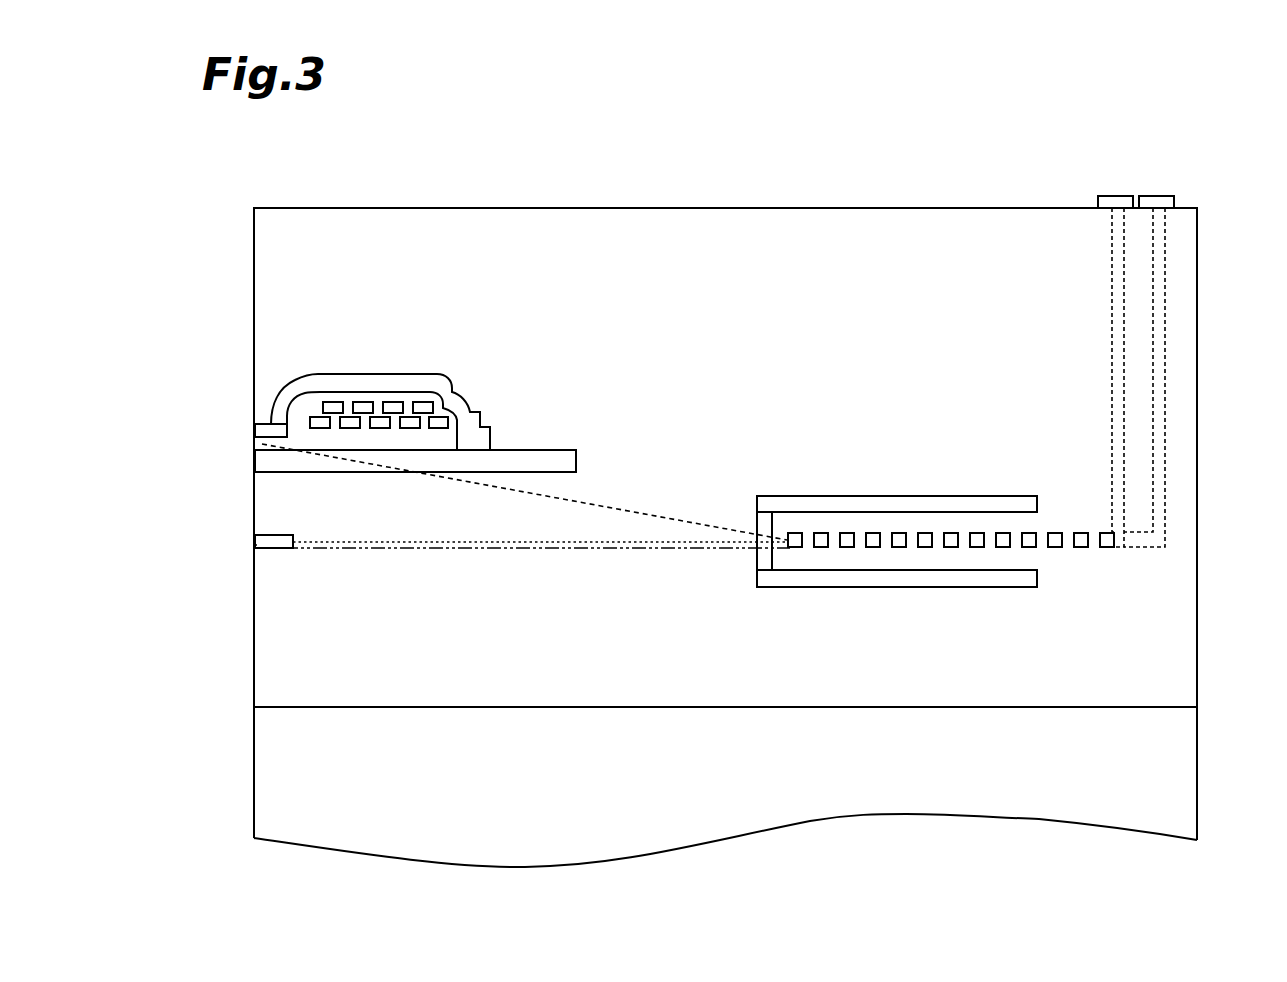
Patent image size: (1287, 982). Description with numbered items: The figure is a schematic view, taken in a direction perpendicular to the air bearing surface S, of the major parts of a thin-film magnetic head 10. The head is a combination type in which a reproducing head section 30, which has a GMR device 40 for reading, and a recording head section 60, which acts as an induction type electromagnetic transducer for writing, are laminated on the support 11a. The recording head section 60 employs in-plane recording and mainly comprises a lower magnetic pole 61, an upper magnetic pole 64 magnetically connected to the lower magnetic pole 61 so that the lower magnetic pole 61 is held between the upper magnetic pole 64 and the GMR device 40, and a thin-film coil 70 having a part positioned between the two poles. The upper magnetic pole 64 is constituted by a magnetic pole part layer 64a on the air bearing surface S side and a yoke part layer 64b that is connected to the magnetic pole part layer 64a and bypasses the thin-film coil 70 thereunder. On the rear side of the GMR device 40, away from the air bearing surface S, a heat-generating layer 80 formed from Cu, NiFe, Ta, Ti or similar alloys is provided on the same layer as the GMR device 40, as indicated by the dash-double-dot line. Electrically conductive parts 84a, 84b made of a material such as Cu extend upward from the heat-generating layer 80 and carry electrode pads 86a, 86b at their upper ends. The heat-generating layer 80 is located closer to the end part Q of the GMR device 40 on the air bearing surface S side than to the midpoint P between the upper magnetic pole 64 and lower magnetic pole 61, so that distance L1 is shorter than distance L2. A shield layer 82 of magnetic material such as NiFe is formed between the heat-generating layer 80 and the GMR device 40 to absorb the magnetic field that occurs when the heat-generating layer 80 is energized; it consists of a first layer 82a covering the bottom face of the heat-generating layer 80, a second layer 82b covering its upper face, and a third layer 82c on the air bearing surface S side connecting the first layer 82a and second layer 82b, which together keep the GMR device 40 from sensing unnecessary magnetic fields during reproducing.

The thin-film magnetic head 10 is at (190, 215).
The support 11a is at (255, 770).
The air bearing surface S is at (255, 683).
The reproducing head section 30 is at (245, 548).
The GMR device 40 is at (277, 533).
The end part Q is at (255, 545).
The midpoint P is at (262, 444).
The recording head section 60 is at (332, 390).
The lower magnetic pole 61 is at (255, 460).
The upper magnetic pole 64 is at (312, 393).
The magnetic pole part layer 64a is at (267, 423).
The yoke part layer 64b is at (293, 383).
The thin-film coil 70 is at (333, 402).
The distance L1 is at (590, 543).
The distance L2 is at (618, 508).
The heat-generating layer 80 is at (845, 533).
The shield layer 82 is at (862, 534).
The first layer 82a is at (866, 587).
The second layer 82b is at (887, 496).
The third layer 82c is at (757, 557).
The electrically conductive part 84a is at (1110, 257).
The electrically conductive part 84b is at (1163, 257).
The electrode pad 86a is at (1113, 196).
The electrode pad 86b is at (1156, 196).